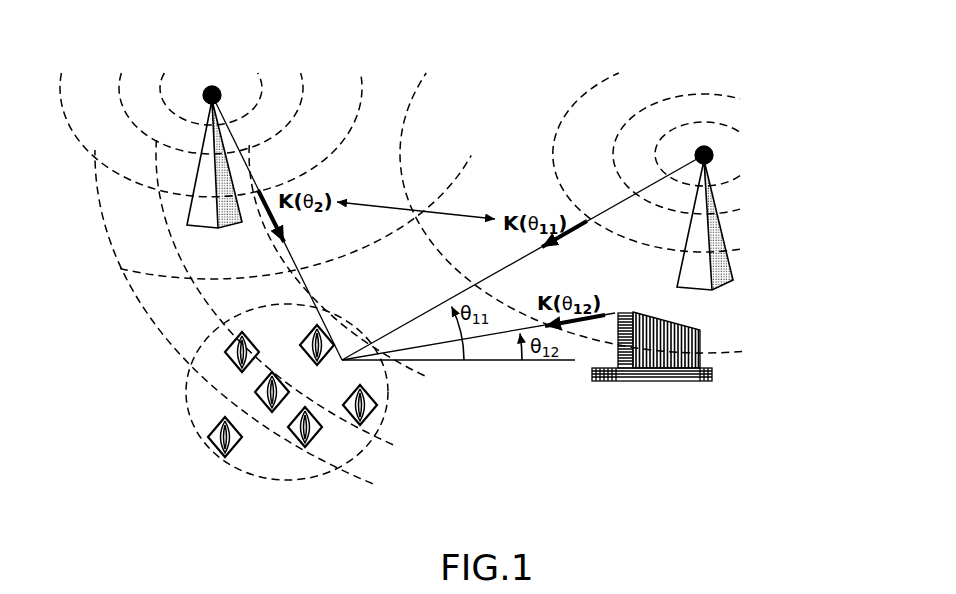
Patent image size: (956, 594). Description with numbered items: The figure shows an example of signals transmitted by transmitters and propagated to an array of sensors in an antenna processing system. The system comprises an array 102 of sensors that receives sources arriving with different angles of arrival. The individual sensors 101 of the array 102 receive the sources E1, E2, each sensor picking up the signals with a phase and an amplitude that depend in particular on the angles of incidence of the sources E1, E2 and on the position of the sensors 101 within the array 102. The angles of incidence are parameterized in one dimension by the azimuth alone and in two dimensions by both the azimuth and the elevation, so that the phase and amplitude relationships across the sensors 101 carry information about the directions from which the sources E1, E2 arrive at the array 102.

The sensors 101 is at (317, 433).
The array of sensors 102 is at (210, 460).
The source E1 is at (212, 87).
The source E2 is at (712, 147).